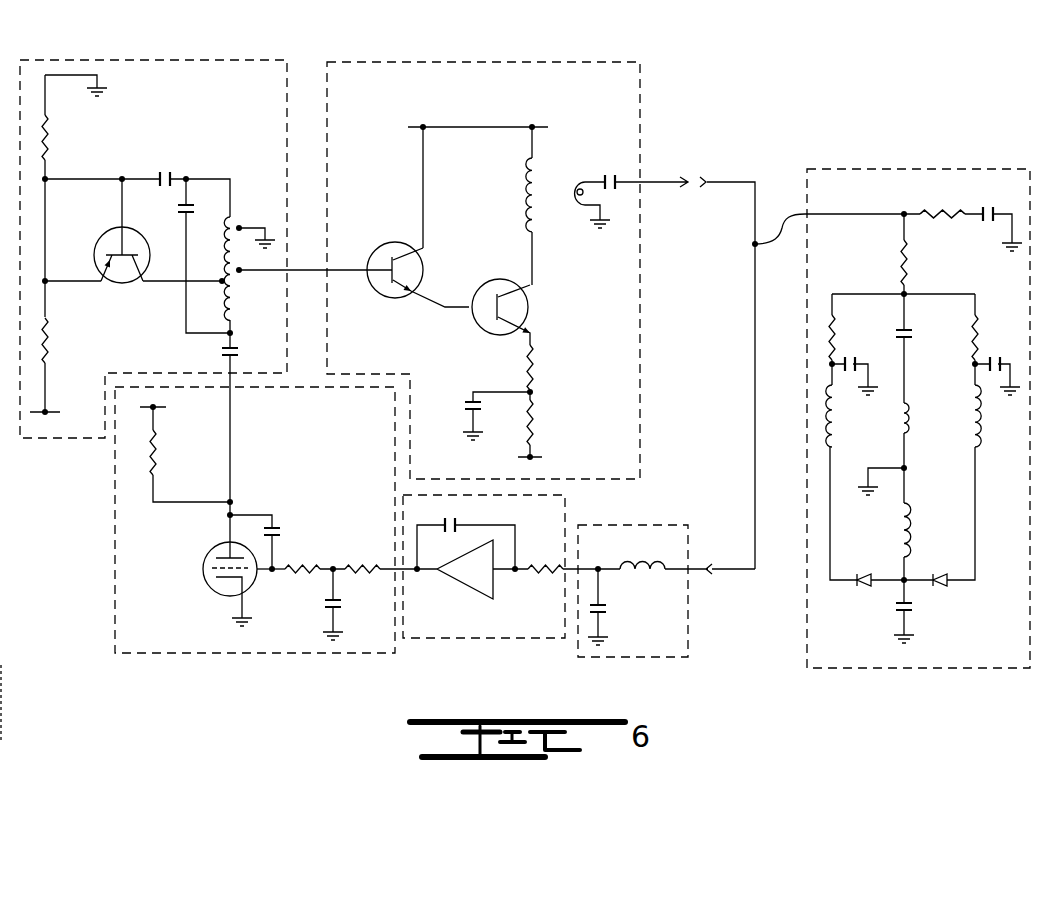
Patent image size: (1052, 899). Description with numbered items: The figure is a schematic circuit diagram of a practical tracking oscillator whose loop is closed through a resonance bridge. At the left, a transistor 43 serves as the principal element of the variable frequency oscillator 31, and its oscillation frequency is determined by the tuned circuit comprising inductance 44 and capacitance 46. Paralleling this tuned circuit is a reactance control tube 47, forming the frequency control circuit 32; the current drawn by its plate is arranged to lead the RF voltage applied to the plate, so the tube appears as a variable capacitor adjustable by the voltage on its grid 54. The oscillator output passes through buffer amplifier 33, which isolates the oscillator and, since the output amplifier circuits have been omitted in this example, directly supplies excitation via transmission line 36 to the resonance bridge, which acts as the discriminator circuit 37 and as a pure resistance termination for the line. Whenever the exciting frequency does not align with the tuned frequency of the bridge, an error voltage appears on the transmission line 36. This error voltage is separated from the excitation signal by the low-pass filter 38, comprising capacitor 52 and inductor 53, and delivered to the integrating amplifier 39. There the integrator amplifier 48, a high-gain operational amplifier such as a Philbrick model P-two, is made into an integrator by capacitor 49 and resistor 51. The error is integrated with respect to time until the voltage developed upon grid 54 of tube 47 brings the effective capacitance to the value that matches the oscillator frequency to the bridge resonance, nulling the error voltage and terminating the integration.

The oscillator 31 is at (168, 60).
The frequency control circuit 32 is at (263, 653).
The buffer amplifier 33 is at (507, 62).
The transmission line 36 is at (765, 244).
The discriminator circuit 37 is at (903, 169).
The low-pass filter 38 is at (656, 525).
The integrating amplifier 39 is at (492, 638).
The transistor 43 is at (118, 282).
The inductance 44 is at (238, 223).
The capacitance 46 is at (178, 210).
The reactance control tube 47 is at (205, 581).
The integrator amplifier 48 is at (462, 588).
The capacitor 49 is at (456, 526).
The resistor 51 is at (532, 567).
The capacitor 52 is at (618, 614).
The inductor 53 is at (640, 564).
The grid 54 is at (258, 573).